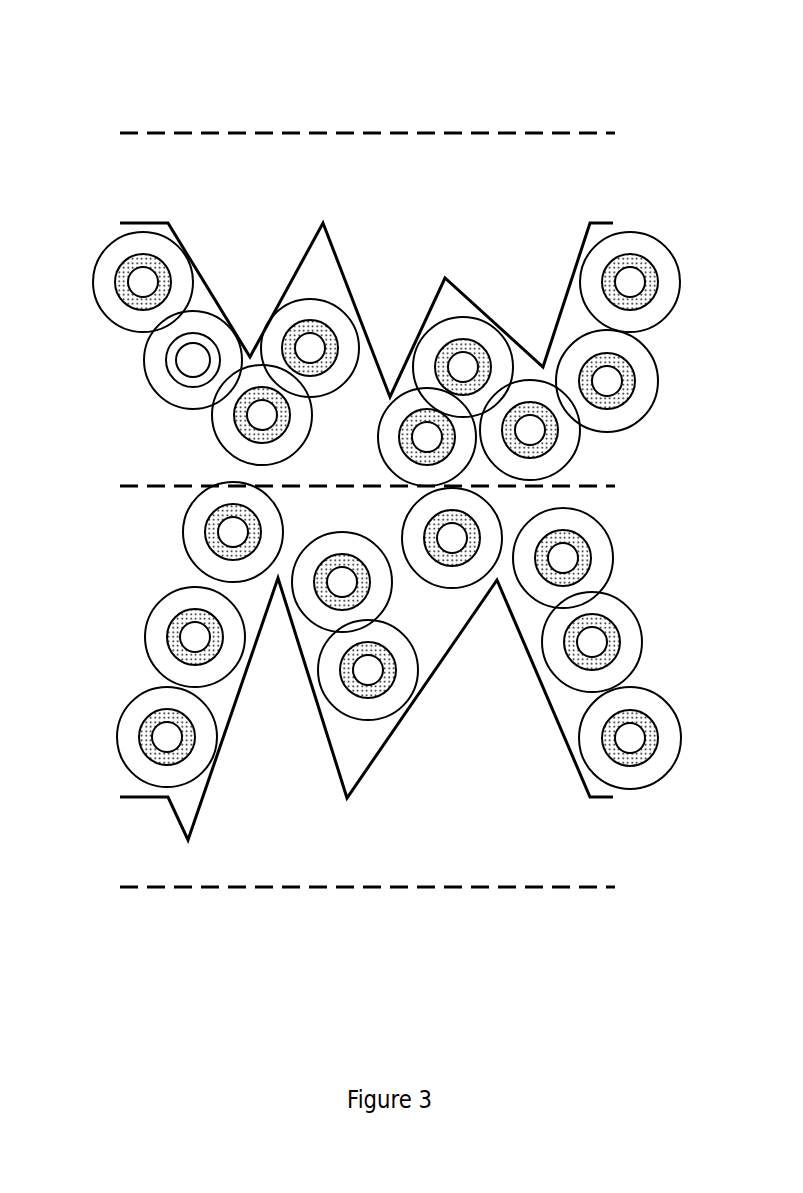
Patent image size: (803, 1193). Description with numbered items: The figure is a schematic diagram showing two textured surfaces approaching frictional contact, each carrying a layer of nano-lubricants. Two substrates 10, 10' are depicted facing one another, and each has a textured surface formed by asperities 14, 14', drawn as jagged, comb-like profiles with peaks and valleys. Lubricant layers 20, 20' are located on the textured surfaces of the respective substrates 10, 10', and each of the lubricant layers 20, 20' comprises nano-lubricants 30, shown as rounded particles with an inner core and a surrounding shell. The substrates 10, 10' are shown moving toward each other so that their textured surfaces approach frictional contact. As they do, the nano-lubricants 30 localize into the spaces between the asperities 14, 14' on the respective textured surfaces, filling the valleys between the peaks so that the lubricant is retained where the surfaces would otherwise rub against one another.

The substrate 10' is at (367, 252).
The asperities 14' is at (366, 204).
The lubricant layer 20' is at (350, 359).
The nano-lubricants 30 is at (668, 288).
The substrate 10 is at (367, 918).
The asperities 14 is at (366, 790).
The lubricant layer 20 is at (364, 635).